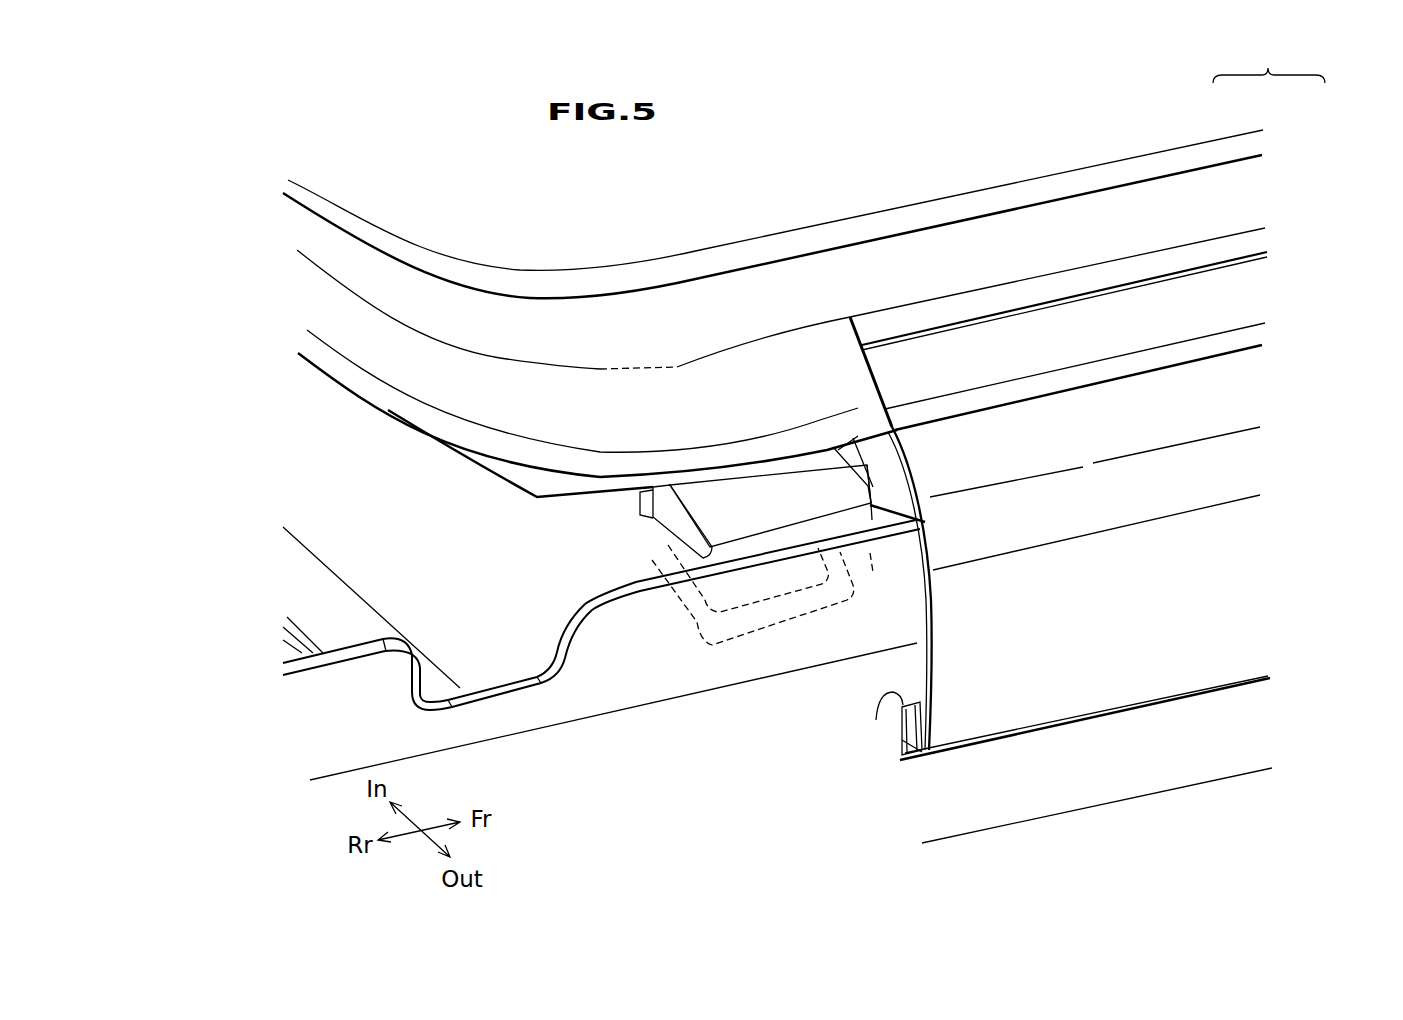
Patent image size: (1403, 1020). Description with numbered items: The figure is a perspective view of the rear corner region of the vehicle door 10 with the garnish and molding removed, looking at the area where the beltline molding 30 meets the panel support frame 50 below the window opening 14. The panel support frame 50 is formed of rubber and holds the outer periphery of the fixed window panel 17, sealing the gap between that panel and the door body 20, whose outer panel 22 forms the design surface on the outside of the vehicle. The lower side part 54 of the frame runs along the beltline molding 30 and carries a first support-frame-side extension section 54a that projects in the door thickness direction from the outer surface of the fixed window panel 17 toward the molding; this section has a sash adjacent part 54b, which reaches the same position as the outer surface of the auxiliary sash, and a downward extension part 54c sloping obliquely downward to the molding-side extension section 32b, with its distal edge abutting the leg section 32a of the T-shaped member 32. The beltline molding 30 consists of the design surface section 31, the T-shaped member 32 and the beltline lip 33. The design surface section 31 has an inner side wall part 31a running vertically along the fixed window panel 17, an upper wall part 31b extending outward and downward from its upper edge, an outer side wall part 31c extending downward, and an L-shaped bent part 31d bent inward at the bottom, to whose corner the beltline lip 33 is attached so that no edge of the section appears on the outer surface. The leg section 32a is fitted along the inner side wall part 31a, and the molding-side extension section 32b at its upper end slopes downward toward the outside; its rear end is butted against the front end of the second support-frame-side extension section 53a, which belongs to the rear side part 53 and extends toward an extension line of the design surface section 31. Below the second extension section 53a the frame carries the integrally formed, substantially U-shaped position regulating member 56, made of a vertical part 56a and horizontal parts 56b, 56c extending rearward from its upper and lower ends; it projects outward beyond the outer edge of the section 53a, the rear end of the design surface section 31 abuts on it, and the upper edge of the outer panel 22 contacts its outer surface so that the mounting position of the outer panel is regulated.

The vehicle door 10 is at (216, 119).
The window opening 14 is at (994, 102).
The fixed window panel 17 is at (1171, 113).
The door body 20 is at (307, 746).
The outer panel 22 is at (570, 768).
The beltline molding 30 is at (1004, 757).
The design surface section 31 is at (1180, 657).
The inner side wall part 31a is at (903, 506).
The upper wall part 31b is at (1226, 400).
The outer side wall part 31c is at (1094, 645).
The bent part 31d is at (876, 720).
The T-shaped member 32 is at (963, 357).
The leg section 32a is at (850, 440).
The molding-side extension section 32b is at (1225, 312).
The beltline lip 33 is at (897, 757).
The panel support frame 50 is at (841, 215).
The rear side part 53 is at (360, 217).
The second support-frame-side extension section 53a is at (654, 400).
The lower side part 54 is at (1117, 162).
The first support-frame-side extension section 54a is at (1269, 65).
The sash adjacent part 54b is at (1217, 195).
The downward extension part 54c is at (1242, 245).
The position regulating member 56 is at (655, 522).
The vertical part 56a is at (867, 577).
The horizontal part 56b is at (767, 512).
The horizontal part 56c is at (675, 625).